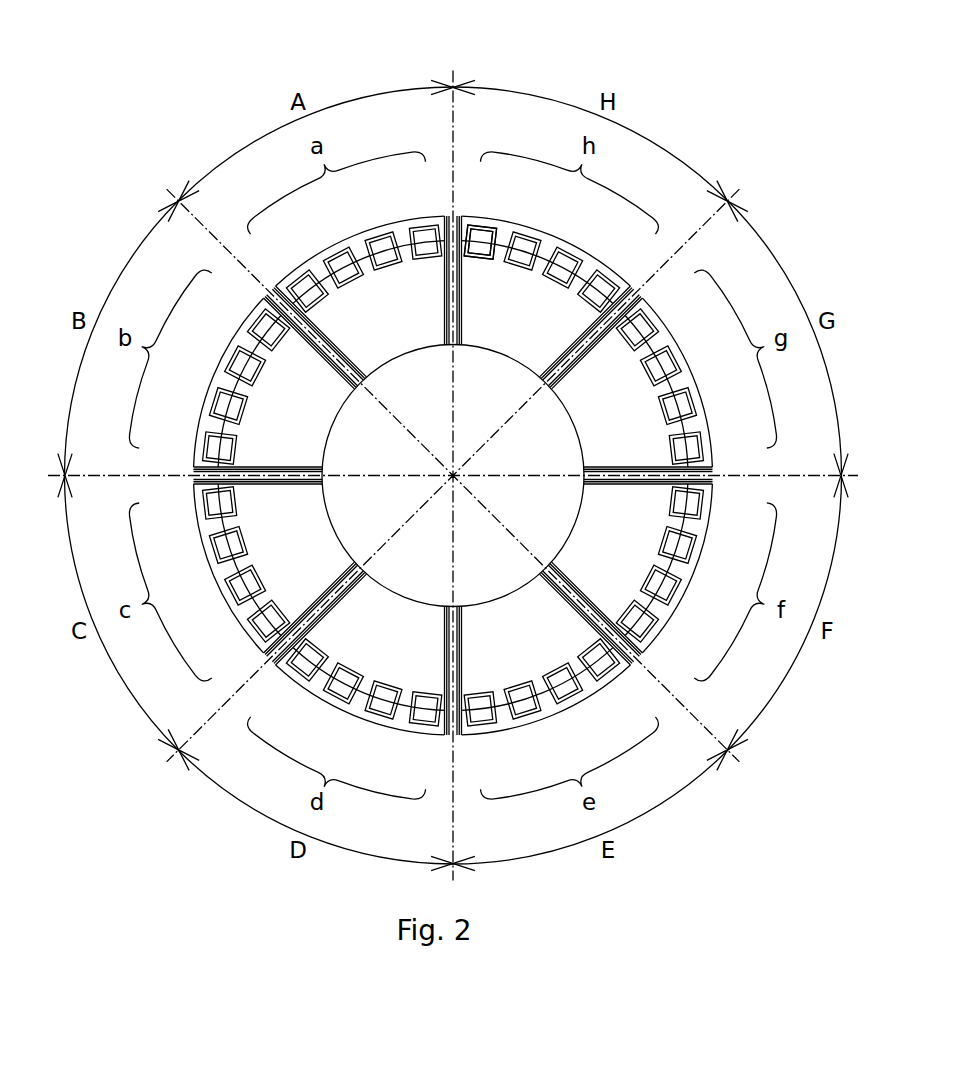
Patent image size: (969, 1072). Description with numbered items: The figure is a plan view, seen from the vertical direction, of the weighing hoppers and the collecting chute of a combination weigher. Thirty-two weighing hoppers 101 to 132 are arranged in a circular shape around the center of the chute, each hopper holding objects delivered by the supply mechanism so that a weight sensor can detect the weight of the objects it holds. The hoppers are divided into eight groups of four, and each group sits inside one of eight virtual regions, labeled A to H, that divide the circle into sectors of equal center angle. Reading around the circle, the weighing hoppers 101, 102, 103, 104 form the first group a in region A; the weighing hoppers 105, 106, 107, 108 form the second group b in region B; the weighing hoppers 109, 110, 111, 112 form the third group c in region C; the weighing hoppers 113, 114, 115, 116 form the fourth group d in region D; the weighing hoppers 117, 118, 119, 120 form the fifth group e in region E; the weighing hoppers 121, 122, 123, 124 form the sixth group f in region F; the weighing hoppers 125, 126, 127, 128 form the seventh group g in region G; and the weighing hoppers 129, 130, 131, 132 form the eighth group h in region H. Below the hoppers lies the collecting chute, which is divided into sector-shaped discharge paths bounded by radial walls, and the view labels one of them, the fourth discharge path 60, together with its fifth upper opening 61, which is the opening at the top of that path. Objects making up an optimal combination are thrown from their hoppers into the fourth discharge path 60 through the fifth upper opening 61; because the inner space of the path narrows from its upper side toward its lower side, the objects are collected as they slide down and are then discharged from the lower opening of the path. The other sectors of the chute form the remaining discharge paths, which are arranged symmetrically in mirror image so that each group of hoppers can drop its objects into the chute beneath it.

The fourth discharge path 60 is at (492, 252).
The fifth upper opening 61 is at (471, 258).
The weighing hopper 101 is at (424, 226).
The weighing hopper 102 is at (379, 236).
The weighing hopper 103 is at (336, 253).
The weighing hopper 104 is at (297, 279).
The weighing hopper 105 is at (256, 320).
The weighing hopper 106 is at (231, 358).
The weighing hopper 107 is at (213, 401).
The weighing hopper 108 is at (204, 446).
The weighing hopper 109 is at (204, 505).
The weighing hopper 110 is at (213, 550).
The weighing hopper 111 is at (231, 593).
The weighing hopper 112 is at (256, 631).
The weighing hopper 113 is at (297, 672).
The weighing hopper 114 is at (336, 698).
The weighing hopper 115 is at (379, 715).
The weighing hopper 116 is at (424, 725).
The weighing hopper 117 is at (482, 725).
The weighing hopper 118 is at (527, 715).
The weighing hopper 119 is at (570, 698).
The weighing hopper 120 is at (609, 672).
The weighing hopper 121 is at (650, 631).
The weighing hopper 122 is at (675, 593).
The weighing hopper 123 is at (693, 550).
The weighing hopper 124 is at (702, 505).
The weighing hopper 125 is at (702, 446).
The weighing hopper 126 is at (693, 401).
The weighing hopper 127 is at (675, 358).
The weighing hopper 128 is at (650, 320).
The weighing hopper 129 is at (609, 279).
The weighing hopper 130 is at (570, 253).
The weighing hopper 131 is at (527, 236).
The weighing hopper 132 is at (482, 226).